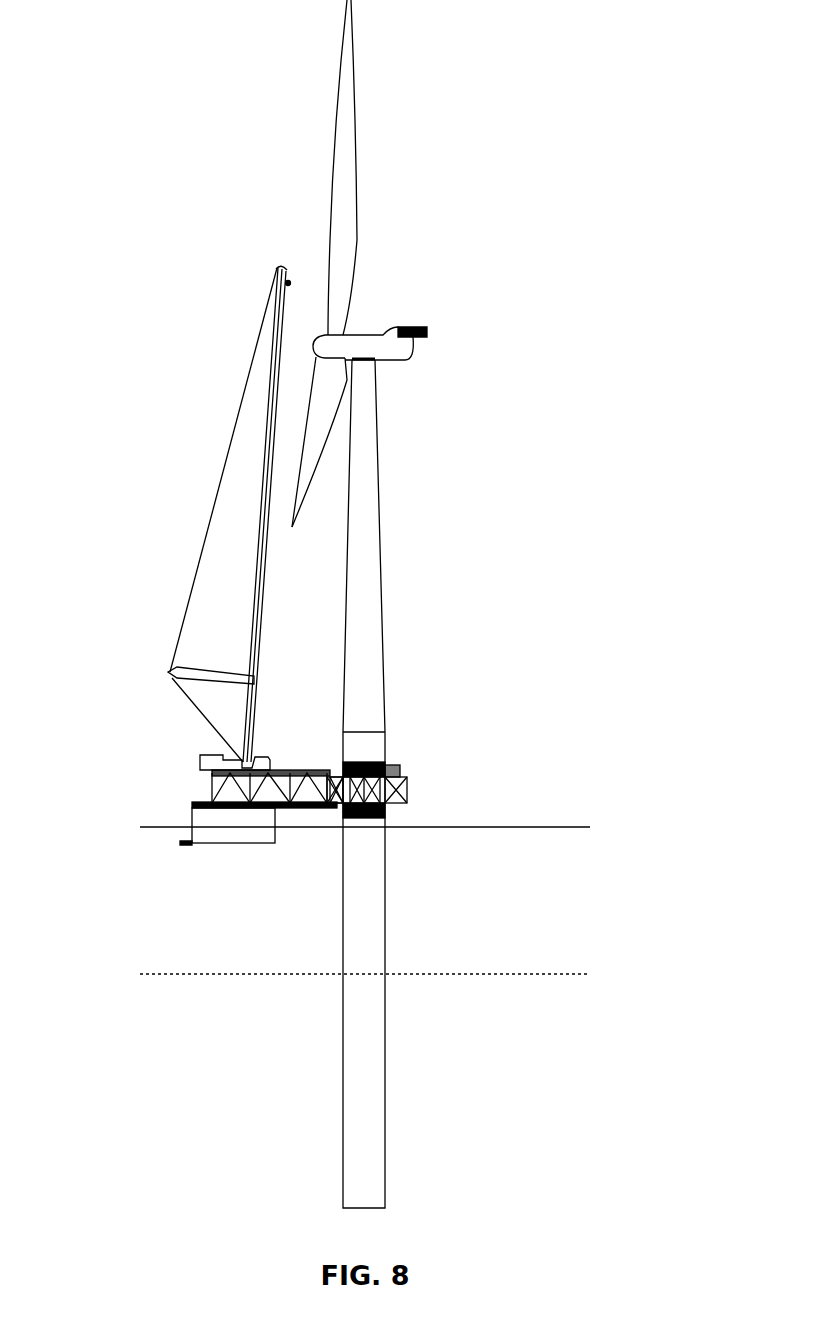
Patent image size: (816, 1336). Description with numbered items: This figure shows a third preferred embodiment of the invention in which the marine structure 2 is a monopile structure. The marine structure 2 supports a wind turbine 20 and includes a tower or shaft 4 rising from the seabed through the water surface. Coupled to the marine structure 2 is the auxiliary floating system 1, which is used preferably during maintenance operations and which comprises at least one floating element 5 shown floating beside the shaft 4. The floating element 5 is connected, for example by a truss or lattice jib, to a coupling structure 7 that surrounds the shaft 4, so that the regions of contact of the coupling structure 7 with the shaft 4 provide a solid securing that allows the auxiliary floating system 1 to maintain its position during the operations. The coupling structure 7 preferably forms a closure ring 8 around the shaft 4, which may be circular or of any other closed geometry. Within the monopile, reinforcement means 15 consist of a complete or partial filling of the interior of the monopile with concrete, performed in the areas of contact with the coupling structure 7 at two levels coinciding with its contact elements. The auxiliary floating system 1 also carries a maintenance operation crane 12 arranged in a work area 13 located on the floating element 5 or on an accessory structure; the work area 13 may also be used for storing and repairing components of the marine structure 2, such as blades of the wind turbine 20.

The auxiliary floating system 1 is at (156, 819).
The marine structure 2 is at (467, 330).
The tower or shaft 4 is at (380, 512).
The floating element 5 is at (255, 832).
The coupling structure 7 is at (313, 772).
The closure ring 8 is at (405, 770).
The maintenance operation crane 12 is at (224, 526).
The work area 13 is at (204, 794).
The reinforcement means 15 is at (385, 818).
The wind turbine 20 is at (369, 335).